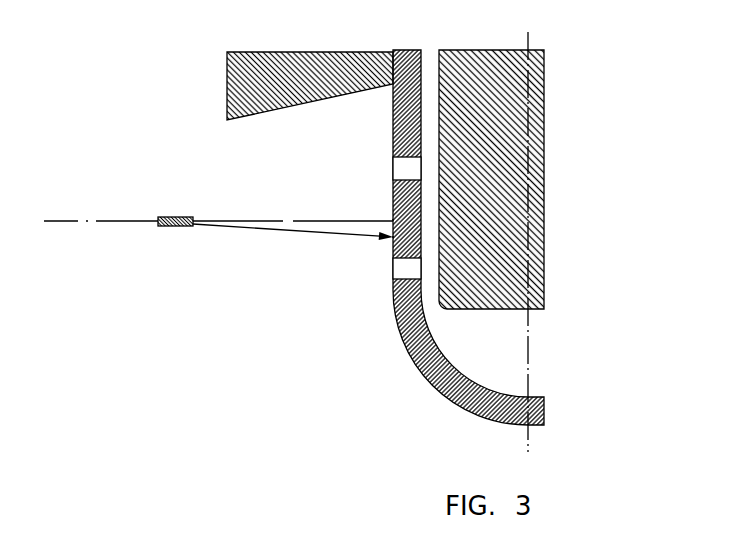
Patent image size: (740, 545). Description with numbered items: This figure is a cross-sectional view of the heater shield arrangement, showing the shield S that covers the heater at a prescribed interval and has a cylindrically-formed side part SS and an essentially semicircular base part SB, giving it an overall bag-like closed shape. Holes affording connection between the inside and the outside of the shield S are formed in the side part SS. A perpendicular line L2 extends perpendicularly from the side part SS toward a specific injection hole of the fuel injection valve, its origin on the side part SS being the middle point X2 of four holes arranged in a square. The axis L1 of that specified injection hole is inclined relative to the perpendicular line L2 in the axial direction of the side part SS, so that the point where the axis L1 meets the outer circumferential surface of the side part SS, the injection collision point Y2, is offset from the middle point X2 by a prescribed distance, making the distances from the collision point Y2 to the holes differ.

The side part SS is at (393, 133).
The middle point X2 is at (393, 218).
The perpendicular line L2 is at (307, 219).
The axis L1 is at (278, 232).
The injection collision point Y2 is at (392, 240).
The shield S is at (433, 249).
The base part SB is at (455, 405).